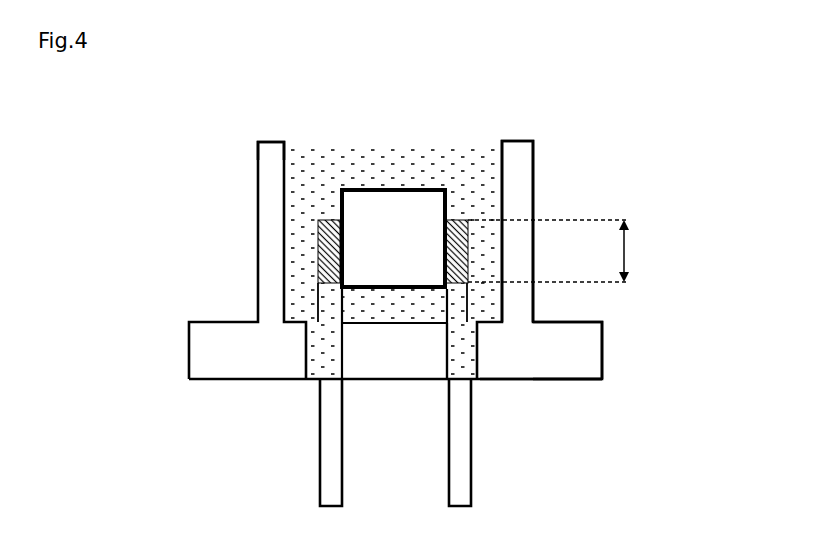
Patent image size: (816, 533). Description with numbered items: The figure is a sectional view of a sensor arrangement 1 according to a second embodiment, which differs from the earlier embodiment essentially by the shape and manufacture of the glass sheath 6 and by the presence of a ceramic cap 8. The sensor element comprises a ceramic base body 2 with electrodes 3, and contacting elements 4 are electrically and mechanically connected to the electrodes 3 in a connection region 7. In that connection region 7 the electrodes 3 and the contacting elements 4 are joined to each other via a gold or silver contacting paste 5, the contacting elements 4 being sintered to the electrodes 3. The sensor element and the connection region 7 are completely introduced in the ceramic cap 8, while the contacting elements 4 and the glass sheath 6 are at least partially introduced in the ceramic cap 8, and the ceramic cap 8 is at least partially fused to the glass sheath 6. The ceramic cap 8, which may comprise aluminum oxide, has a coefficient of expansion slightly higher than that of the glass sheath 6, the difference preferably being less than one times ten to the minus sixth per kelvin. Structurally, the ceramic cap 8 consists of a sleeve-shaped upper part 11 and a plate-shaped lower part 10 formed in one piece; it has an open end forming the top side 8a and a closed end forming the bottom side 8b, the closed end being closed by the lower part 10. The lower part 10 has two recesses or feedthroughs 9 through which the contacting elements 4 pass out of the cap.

The sensor arrangement 1 is at (183, 298).
The ceramic base body 2 is at (390, 205).
The electrodes 3 is at (340, 203).
The contacting elements 4 is at (326, 408).
The contacting paste 5 is at (453, 220).
The glass sheath 6 is at (307, 162).
The connection region 7 is at (628, 250).
The ceramic cap 8 is at (207, 353).
The top side 8a is at (260, 138).
The bottom side 8b is at (592, 380).
The feedthroughs 9 is at (445, 360).
The lower part 10 is at (570, 342).
The sleeve-shaped upper part 11 is at (533, 172).